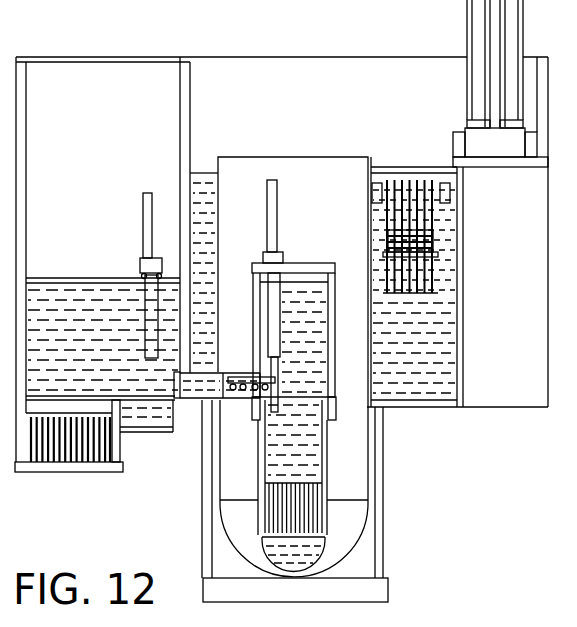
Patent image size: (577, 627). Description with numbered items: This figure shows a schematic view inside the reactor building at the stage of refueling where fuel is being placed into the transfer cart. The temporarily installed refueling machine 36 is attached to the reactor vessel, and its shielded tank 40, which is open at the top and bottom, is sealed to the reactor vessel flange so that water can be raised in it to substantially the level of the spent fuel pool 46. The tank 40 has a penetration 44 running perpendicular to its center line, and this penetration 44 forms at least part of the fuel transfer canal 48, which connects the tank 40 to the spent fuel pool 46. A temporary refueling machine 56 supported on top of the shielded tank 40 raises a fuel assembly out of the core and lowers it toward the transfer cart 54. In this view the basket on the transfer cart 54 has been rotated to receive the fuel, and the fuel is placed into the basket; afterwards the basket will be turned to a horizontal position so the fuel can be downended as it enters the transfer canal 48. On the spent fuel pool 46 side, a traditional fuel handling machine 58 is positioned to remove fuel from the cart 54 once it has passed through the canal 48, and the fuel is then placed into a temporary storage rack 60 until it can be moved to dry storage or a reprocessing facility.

The temporarily installed refueling machine 36 is at (325, 240).
The shielded tank 40 is at (337, 343).
The penetration 44 is at (236, 377).
The spent fuel pool 46 is at (80, 312).
The fuel transfer canal 48 is at (198, 392).
The transfer cart 54 is at (240, 394).
The temporary refueling machine 56 is at (285, 252).
The fuel handling machine 58 is at (146, 228).
The temporary storage rack 60 is at (85, 449).